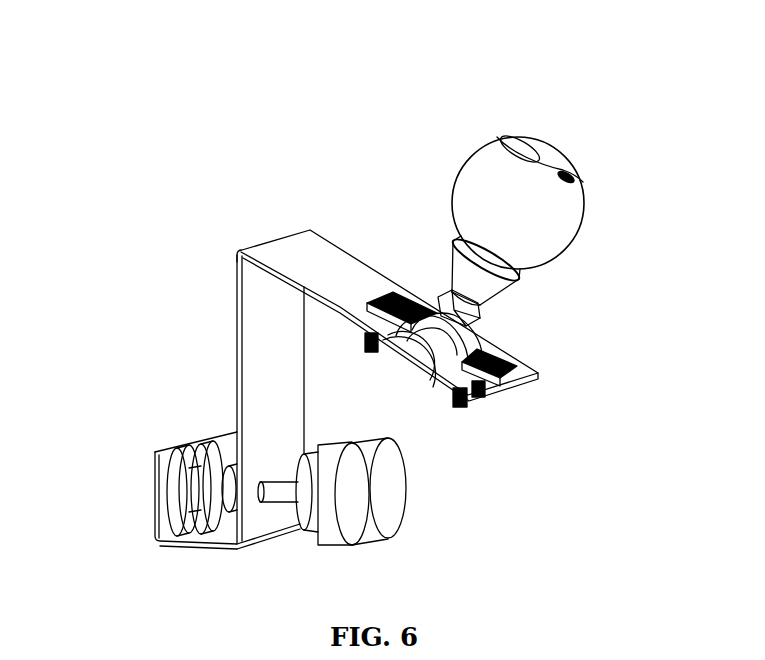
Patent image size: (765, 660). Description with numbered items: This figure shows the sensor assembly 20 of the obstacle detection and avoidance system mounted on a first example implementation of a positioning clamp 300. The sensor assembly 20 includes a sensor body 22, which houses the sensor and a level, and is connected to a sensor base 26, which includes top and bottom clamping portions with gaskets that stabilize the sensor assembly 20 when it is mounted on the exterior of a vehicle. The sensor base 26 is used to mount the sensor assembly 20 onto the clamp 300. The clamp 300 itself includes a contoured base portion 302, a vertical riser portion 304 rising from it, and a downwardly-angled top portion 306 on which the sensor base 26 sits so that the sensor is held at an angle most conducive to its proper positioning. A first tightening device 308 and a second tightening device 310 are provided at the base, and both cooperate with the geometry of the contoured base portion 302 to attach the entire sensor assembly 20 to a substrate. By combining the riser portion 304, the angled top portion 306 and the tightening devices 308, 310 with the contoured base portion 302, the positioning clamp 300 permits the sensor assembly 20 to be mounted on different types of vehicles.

The positioning clamp 300 is at (266, 210).
The sensor assembly 20 is at (588, 181).
The sensor body 22 is at (562, 235).
The sensor base 26 is at (517, 365).
The contoured base portion 302 is at (153, 522).
The vertical riser portion 304 is at (238, 330).
The downwardly-angled top portion 306 is at (350, 258).
The first tightening device 308 is at (330, 545).
The second tightening device 310 is at (407, 487).